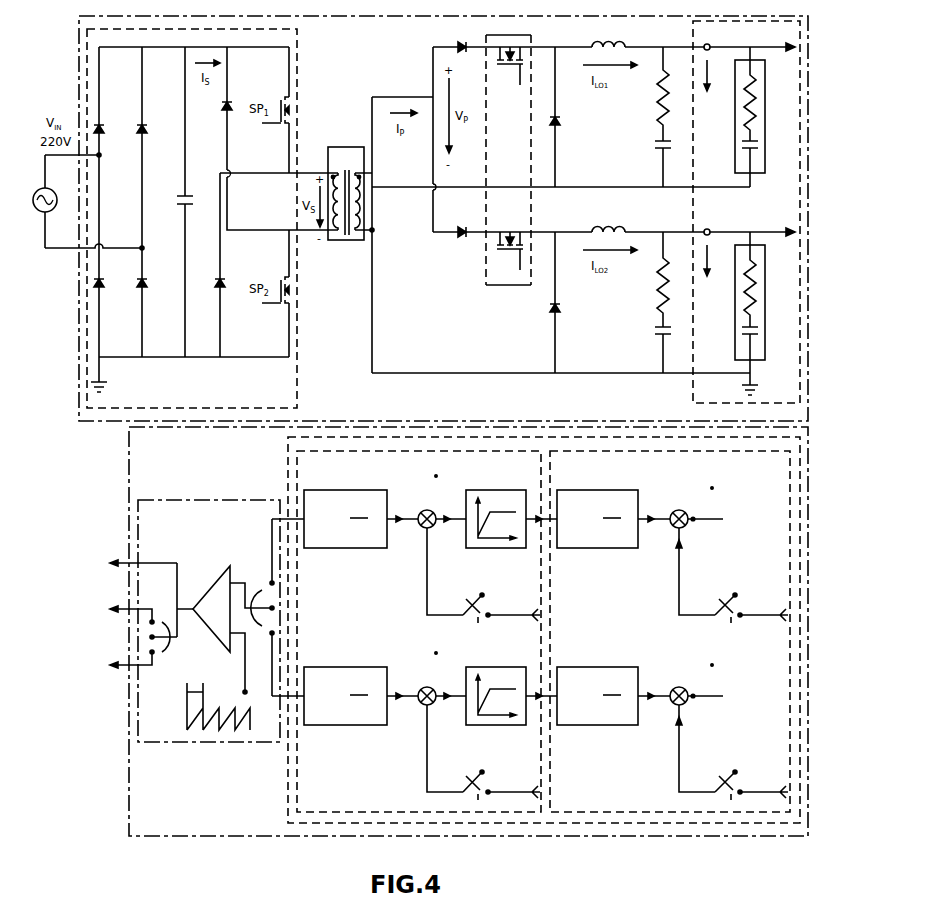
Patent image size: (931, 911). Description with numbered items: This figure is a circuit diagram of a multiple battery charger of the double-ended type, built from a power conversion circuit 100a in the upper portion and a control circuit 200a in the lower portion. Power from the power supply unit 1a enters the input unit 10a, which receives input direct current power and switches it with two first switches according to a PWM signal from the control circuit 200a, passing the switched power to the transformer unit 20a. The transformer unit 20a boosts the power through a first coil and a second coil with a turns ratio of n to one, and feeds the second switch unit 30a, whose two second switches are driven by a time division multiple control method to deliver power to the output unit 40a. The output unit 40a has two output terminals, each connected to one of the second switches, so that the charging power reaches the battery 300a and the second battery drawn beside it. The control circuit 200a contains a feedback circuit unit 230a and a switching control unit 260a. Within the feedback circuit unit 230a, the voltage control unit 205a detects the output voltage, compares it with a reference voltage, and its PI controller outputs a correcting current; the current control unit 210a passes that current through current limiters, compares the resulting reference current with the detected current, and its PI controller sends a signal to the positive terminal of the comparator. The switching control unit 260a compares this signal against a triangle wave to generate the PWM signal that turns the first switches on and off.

The power supply unit 1a is at (42, 214).
The input unit 10a is at (297, 63).
The transformer unit 20a is at (346, 147).
The second switch unit 30a is at (510, 292).
The output unit 40a is at (726, 212).
The power conversion circuit 100a is at (117, 396).
The control circuit 200a is at (129, 461).
The voltage control unit 205a is at (617, 451).
The current control unit 210a is at (445, 437).
The feedback circuit unit 230a is at (533, 451).
The switching control unit 260a is at (210, 745).
The battery 300a is at (735, 143).